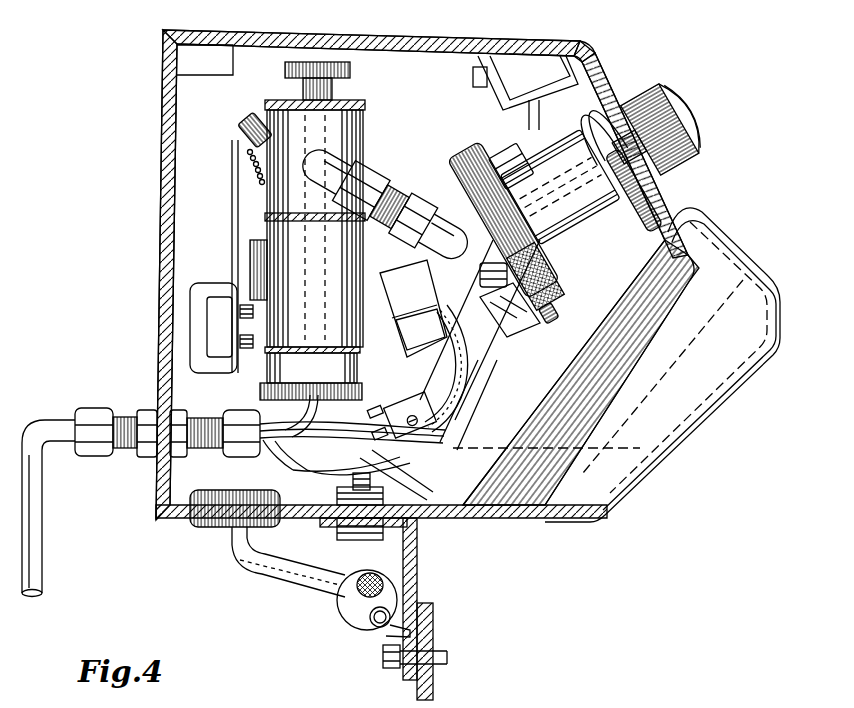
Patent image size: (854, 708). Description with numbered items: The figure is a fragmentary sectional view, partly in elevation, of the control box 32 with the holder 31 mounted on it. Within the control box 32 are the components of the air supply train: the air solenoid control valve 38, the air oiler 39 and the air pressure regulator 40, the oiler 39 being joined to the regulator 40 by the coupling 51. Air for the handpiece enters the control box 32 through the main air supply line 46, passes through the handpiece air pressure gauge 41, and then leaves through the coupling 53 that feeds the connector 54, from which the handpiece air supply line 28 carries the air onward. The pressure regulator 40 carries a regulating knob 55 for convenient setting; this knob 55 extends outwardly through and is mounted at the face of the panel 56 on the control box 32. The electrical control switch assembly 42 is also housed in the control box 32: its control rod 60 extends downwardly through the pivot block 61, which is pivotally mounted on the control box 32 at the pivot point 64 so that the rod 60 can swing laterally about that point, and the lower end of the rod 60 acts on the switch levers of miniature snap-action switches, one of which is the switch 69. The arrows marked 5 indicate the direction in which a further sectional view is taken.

The section line 5- 5 is at (733, 100).
The handpiece air supply line 28 is at (37, 513).
The holder 31 is at (737, 240).
The control box 32 is at (148, 216).
The air solenoid control valve 38 is at (260, 247).
The air oiler 39 is at (287, 117).
The air pressure regulator 40 is at (613, 180).
The handpiece air pressure gauge 41 is at (633, 210).
The electrical control switch assembly 42 is at (418, 481).
The main air supply line 46 is at (287, 580).
The coupling 51 is at (390, 193).
The coupling 53 is at (320, 440).
The connector 54 is at (128, 408).
The regulating knob 55 is at (690, 137).
The panel 56 is at (597, 110).
The control rod 60 is at (490, 337).
The pivot block 61 is at (513, 310).
The pivot point 64 is at (557, 317).
The snap-action switch 69 is at (403, 400).